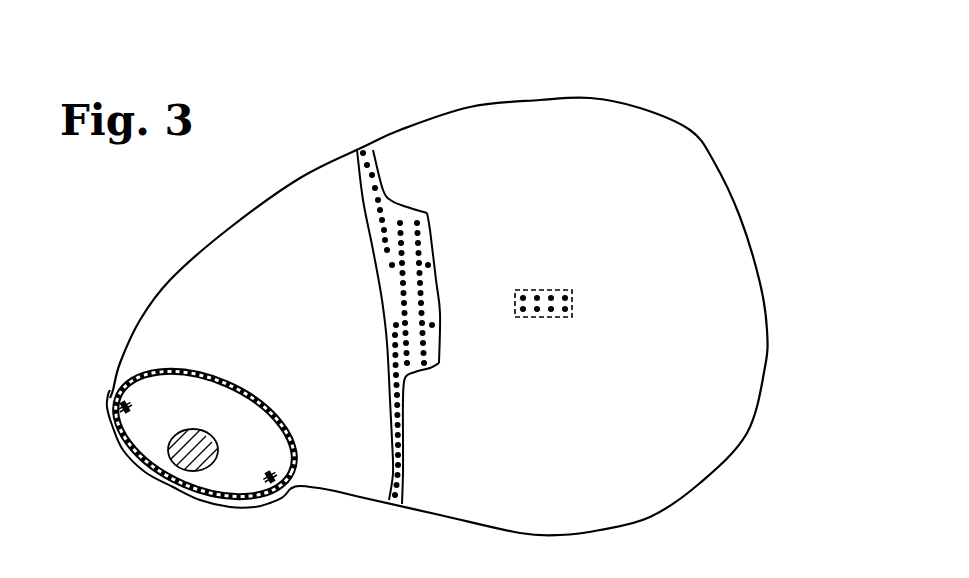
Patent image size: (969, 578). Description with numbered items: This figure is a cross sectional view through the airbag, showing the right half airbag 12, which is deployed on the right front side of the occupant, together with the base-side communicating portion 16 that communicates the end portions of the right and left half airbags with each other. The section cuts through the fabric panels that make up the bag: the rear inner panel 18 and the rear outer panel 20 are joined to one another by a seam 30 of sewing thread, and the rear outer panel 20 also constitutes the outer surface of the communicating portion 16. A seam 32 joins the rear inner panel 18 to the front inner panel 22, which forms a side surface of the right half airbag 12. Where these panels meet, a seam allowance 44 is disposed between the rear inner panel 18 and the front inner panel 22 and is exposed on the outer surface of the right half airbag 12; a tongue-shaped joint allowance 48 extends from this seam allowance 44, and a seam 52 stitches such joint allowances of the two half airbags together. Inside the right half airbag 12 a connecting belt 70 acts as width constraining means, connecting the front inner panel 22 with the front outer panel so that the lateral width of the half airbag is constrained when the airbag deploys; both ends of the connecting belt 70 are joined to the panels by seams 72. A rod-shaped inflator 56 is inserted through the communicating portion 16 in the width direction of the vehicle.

The right half airbag 12 is at (700, 126).
The communicating portion 16 is at (210, 413).
The rear inner panel 18 is at (178, 368).
The rear outer panel 20 is at (216, 498).
The front inner panel 22 is at (572, 128).
The seam 30 is at (125, 413).
The seam 32 is at (372, 194).
The seam allowance 44 is at (406, 472).
The tongue-shaped joint allowance 48 is at (408, 203).
The seam 52 is at (428, 335).
The inflator 56 is at (194, 456).
The connecting belt 70 is at (550, 291).
The seam 72 is at (546, 302).